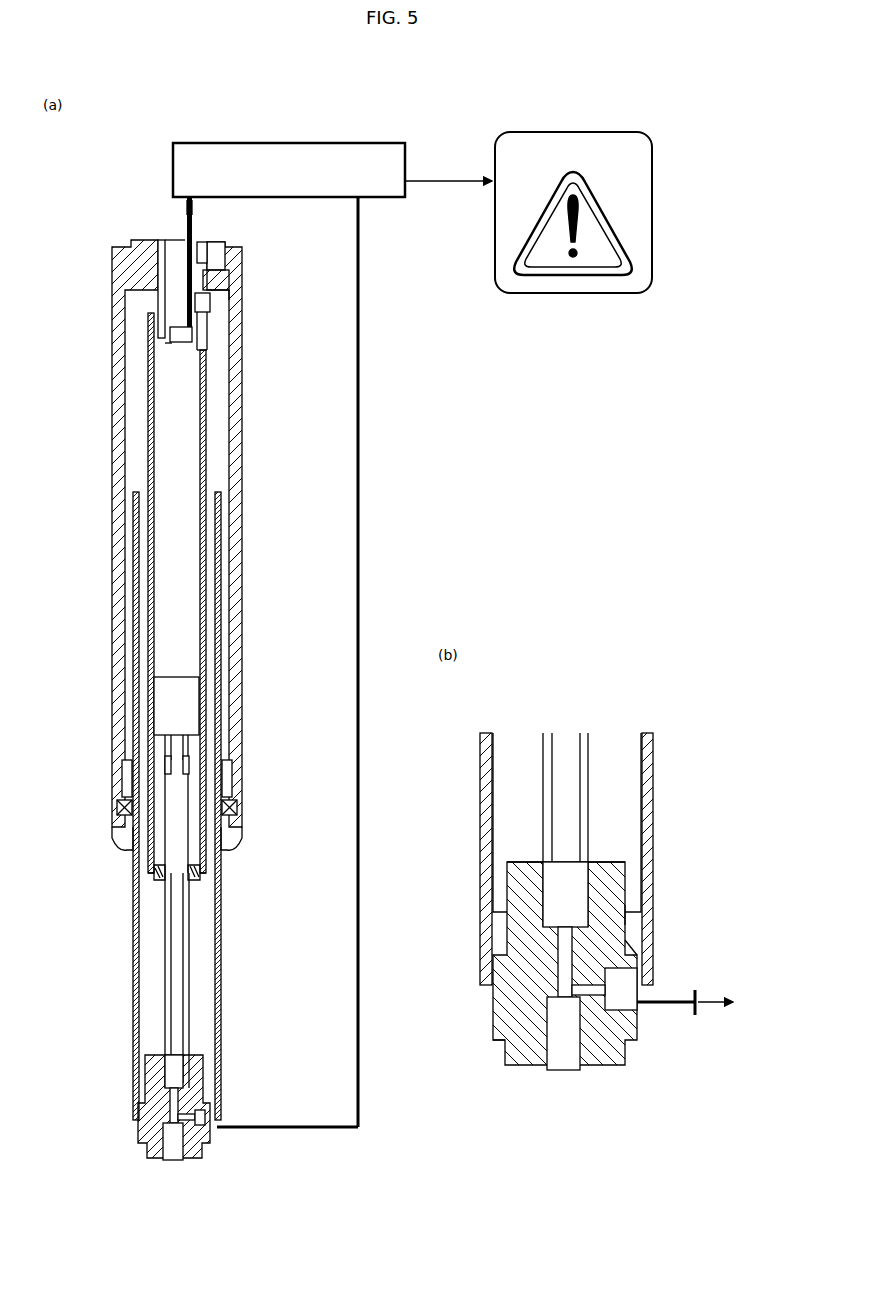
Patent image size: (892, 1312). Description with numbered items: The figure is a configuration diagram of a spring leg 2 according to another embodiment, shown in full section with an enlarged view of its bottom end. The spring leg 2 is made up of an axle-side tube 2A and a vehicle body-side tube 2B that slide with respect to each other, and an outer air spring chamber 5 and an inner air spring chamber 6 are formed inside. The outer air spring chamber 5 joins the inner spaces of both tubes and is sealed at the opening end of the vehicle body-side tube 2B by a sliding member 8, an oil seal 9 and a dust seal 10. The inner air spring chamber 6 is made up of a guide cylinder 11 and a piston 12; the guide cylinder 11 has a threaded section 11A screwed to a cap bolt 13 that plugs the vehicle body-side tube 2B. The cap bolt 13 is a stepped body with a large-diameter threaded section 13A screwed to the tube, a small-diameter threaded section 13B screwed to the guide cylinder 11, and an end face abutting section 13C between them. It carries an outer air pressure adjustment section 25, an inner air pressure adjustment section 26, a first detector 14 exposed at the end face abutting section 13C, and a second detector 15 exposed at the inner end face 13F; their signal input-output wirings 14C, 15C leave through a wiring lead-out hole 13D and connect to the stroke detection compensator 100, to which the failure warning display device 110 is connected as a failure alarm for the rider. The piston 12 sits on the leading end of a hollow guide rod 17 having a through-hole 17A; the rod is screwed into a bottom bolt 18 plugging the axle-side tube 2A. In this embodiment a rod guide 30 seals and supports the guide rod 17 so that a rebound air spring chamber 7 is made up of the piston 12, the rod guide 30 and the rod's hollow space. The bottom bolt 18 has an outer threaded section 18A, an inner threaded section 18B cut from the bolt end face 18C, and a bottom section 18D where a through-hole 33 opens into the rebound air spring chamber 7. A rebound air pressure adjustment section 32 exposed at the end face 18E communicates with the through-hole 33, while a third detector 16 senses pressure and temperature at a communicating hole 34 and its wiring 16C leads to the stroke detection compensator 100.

The spring leg 2 is at (120, 112).
The axle-side tube 2A is at (133, 918).
The vehicle body-side tube 2B is at (114, 712).
The outer air spring chamber 5 is at (217, 946).
The inner air spring chamber 6 is at (200, 610).
The rebound air spring chamber 7 is at (175, 990).
The sliding member 8 is at (226, 778).
The oil seal 9 is at (233, 808).
The dust seal 10 is at (238, 838).
The guide cylinder 11 is at (200, 740).
The threaded section 11A is at (204, 347).
The piston 12 is at (181, 697).
The cap bolt 13 is at (222, 258).
The large-diameter threaded section 13A is at (236, 268).
The small-diameter threaded section 13B is at (207, 325).
The end face abutting section 13C is at (218, 283).
The wiring lead-out hole 13D is at (185, 236).
The inner end face 13F is at (167, 343).
The first detector 14 is at (204, 302).
The signal input-output wiring 14C is at (196, 216).
The second detector 15 is at (173, 332).
The signal input-output wiring 15C is at (185, 214).
The third detector 16 is at (212, 1120).
The wiring 16C is at (306, 1130).
The guide rod 17 is at (190, 903).
The through-hole 17A is at (166, 763).
The bottom bolt 18 is at (205, 1148).
The outer threaded section 18A is at (627, 930).
The inner threaded section 18B is at (580, 892).
The bolt end face 18C is at (607, 862).
The bottom section 18D is at (590, 915).
The end face 18E is at (503, 1042).
The outer air pressure adjustment section 25 is at (208, 250).
The inner air pressure adjustment section 26 is at (160, 242).
The rod guide 30 is at (152, 878).
The rebound air pressure adjustment section 32 is at (172, 1162).
The through-hole 33 is at (560, 940).
The communicating hole 34 is at (590, 978).
The stroke detection compensator 100 is at (332, 170).
The failure warning display device 110 is at (548, 132).